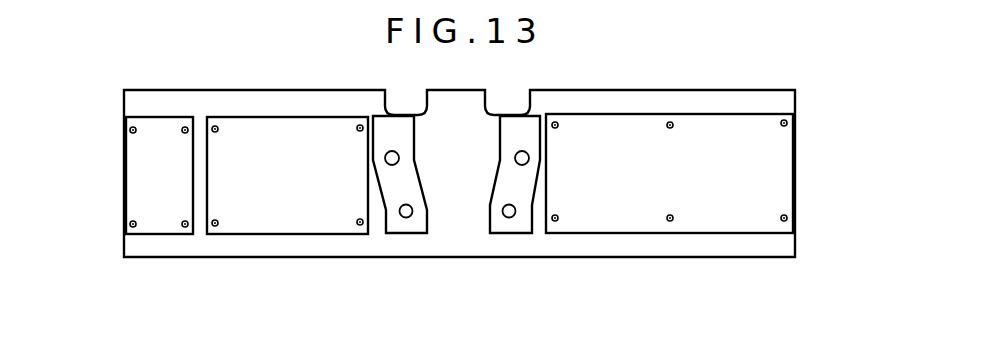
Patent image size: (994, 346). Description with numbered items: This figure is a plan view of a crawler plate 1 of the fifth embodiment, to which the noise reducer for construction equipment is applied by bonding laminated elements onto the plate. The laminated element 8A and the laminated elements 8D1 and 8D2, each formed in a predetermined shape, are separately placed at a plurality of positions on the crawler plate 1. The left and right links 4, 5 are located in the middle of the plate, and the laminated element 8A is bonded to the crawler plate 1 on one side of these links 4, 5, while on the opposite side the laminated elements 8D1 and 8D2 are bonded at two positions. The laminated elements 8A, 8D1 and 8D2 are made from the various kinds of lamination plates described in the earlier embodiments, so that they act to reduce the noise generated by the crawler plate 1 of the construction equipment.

The crawler plate 1 is at (305, 250).
The left link 4 is at (506, 223).
The right link 5 is at (409, 223).
The laminated element 8A is at (786, 164).
The laminated element 8D1 is at (285, 225).
The laminated element 8D2 is at (136, 180).